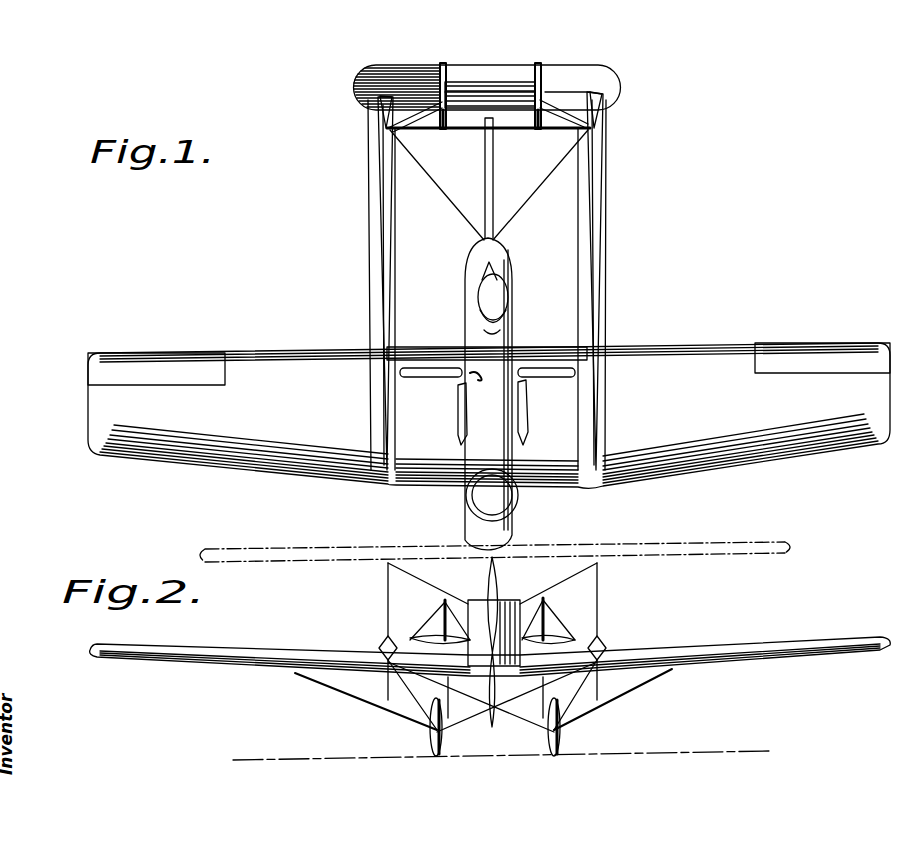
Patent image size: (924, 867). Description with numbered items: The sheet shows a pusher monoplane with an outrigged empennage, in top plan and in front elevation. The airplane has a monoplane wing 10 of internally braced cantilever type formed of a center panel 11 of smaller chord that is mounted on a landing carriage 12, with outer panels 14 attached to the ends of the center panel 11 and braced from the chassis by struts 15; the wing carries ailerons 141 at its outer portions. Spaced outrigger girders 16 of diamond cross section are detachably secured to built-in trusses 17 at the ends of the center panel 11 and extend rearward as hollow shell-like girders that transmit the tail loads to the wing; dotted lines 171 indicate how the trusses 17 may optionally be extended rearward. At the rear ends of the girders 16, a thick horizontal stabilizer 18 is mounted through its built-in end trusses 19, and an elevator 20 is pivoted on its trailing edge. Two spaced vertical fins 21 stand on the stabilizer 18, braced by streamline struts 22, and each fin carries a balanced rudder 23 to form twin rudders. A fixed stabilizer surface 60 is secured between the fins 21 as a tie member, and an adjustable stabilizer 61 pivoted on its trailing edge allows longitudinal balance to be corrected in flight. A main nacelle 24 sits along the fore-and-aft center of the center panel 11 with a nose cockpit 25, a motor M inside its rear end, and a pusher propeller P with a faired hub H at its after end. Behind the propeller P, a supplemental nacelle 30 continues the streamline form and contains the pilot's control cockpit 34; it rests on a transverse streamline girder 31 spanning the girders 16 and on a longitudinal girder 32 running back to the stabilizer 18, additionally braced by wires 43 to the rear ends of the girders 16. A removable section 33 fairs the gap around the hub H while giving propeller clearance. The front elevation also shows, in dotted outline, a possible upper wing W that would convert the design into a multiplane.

In FIG. 1, the monoplane wing 10 is at (697, 347).
In FIG. 2, the monoplane wing 10 is at (740, 641).
In FIG. 1, the center panel 11 is at (580, 480).
In FIG. 2, the center panel 11 is at (604, 650).
In FIG. 2, the landing carriage 12 is at (518, 716).
In FIG. 1, the outer panels 14 is at (88, 405).
In FIG. 2, the outer panels 14 is at (172, 662).
In FIG. 1, the ailerons 141 is at (814, 328).
In FIG. 2, the bracing struts 15 is at (352, 697).
In FIG. 1, the outrigger girders 16 is at (395, 250).
In FIG. 1, the built-in trusses 17 is at (372, 410).
In FIG. 2, the built-in trusses 17 is at (594, 645).
In FIG. 1, the dotted lines 171 is at (606, 342).
In FIG. 1, the horizontal stabilizer 18 is at (517, 130).
In FIG. 2, the horizontal stabilizer 18 is at (382, 640).
In FIG. 1, the built-in trusses 19 is at (380, 118).
In FIG. 1, the elevator 20 is at (612, 78).
In FIG. 1, the fins 21 is at (443, 118).
In FIG. 2, the fins 21 is at (452, 612).
In FIG. 1, the streamline struts 22 is at (418, 115).
In FIG. 2, the streamline struts 22 is at (560, 635).
In FIG. 1, the rudders 23 is at (537, 64).
In FIG. 2, the rudders 23 is at (440, 638).
In FIG. 1, the main nacelle 24 is at (478, 455).
In FIG. 2, the main nacelle 24 is at (472, 662).
In FIG. 1, the cockpit arrangement 25 is at (480, 500).
In FIG. 1, the supplemental nacelle 30 is at (509, 297).
In FIG. 1, the transverse streamline girder 31 is at (548, 350).
In FIG. 1, the longitudinal girder 32 is at (490, 190).
In FIG. 1, the removable section 33 is at (508, 345).
In FIG. 1, the control cockpit 34 is at (497, 285).
In FIG. 1, the brace wires 43 is at (470, 214).
In FIG. 1, the fixed stabilizer surface 60 is at (466, 108).
In FIG. 1, the adjustable stabilizer 61 is at (505, 90).
In FIG. 1, the pusher propeller P is at (540, 378).
In FIG. 2, the pusher propeller P is at (500, 600).
In FIG. 1, the hub H is at (468, 378).
In FIG. 1, the motor M is at (458, 415).
In FIG. 2, the upper wing W is at (652, 548).